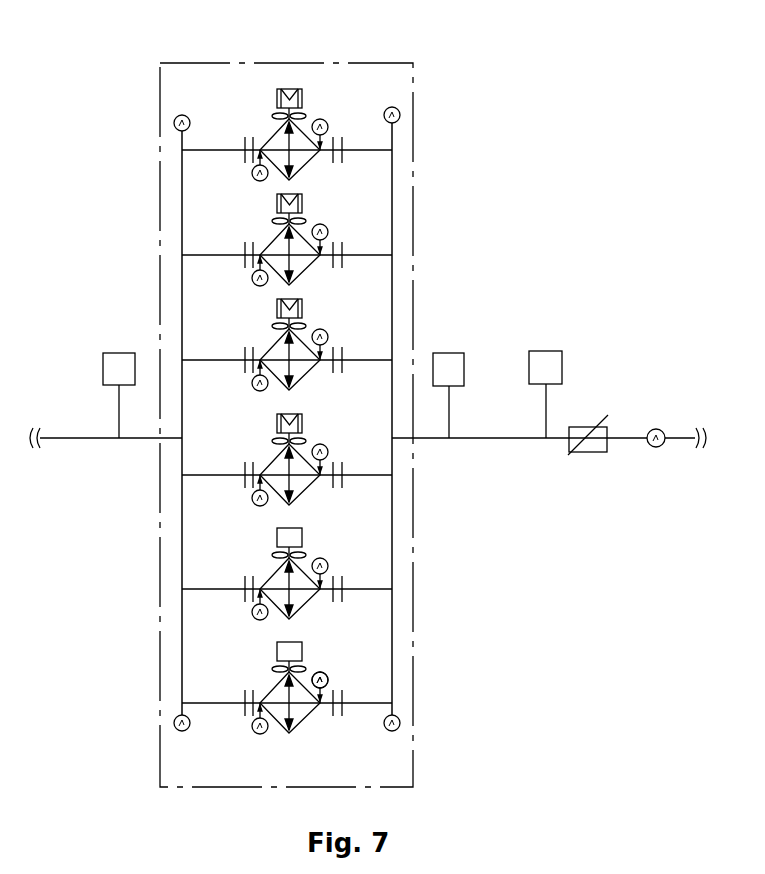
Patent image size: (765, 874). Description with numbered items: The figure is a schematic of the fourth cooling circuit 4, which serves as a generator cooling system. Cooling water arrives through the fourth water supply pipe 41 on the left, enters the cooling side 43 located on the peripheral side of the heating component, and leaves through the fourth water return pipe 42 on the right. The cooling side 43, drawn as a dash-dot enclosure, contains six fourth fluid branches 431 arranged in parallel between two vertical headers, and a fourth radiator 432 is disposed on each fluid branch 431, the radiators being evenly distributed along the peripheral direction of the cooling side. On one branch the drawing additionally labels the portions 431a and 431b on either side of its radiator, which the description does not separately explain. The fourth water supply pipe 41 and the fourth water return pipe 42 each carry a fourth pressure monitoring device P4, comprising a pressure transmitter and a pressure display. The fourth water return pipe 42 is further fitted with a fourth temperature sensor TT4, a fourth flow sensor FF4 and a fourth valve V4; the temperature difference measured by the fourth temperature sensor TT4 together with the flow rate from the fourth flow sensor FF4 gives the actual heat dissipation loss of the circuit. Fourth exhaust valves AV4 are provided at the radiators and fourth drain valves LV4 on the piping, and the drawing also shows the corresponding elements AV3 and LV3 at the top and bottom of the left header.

The fourth cooling circuit 4 is at (309, 39).
The fourth water supply pipe 41 is at (45, 440).
The fourth water return pipe 42 is at (695, 440).
The cooling side 43 is at (413, 305).
The fourth fluid branch 431 is at (333, 125).
The valve outlet section 431a is at (362, 252).
The valve inlet section 431b is at (202, 253).
The fourth radiator 432 is at (280, 245).
The air vent valve AV3 is at (175, 116).
The fourth exhaust valve AV4 is at (327, 674).
The drain valve LV3 is at (174, 727).
The fourth drain valve LV4 is at (399, 727).
The fourth pressure monitoring device P4 is at (119, 410).
The fourth temperature sensor TT4 is at (547, 410).
The fourth valve V4 is at (656, 428).
The fourth flow sensor FF4 is at (593, 448).